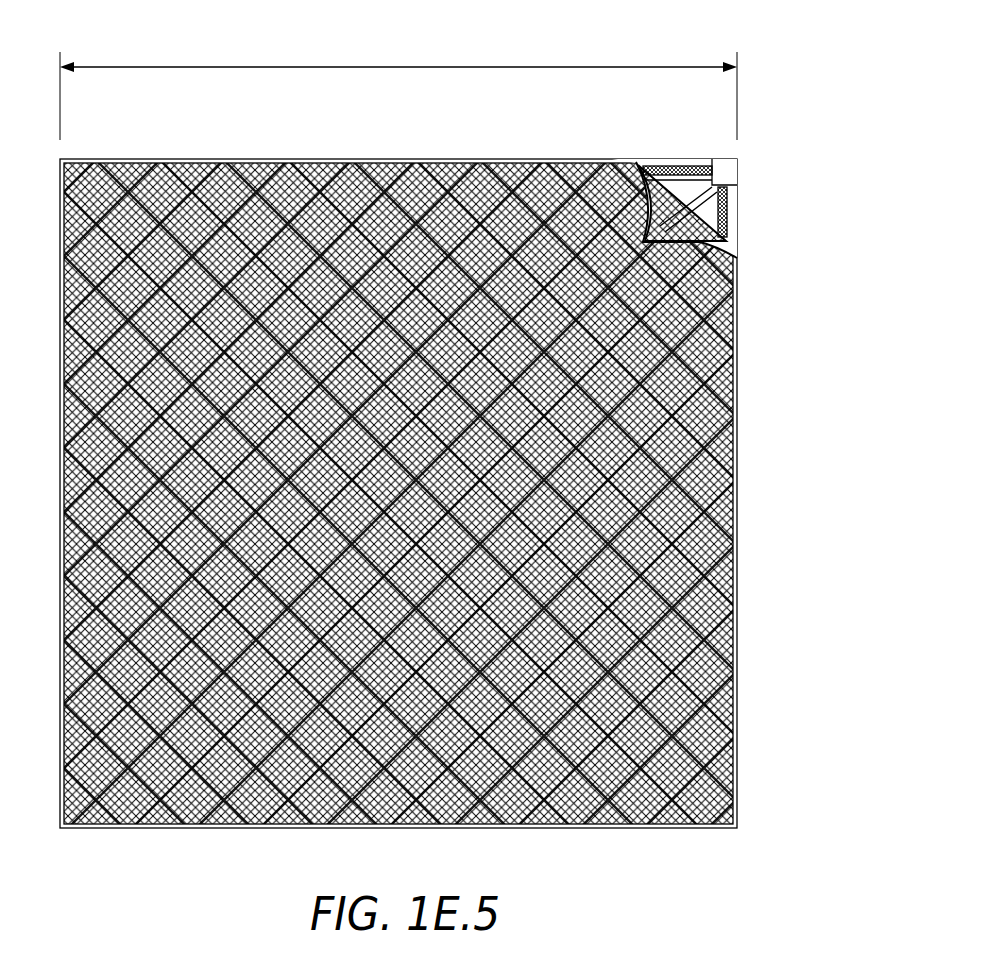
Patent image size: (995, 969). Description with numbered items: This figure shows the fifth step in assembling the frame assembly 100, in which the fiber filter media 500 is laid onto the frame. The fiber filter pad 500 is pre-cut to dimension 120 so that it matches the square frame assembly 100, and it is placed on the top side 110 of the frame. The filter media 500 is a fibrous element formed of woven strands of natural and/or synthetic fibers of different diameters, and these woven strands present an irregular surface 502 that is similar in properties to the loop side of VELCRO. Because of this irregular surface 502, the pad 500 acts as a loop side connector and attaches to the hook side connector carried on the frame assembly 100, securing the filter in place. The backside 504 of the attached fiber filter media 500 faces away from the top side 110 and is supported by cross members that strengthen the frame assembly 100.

The frame assembly 100 is at (737, 283).
The top side 110 is at (732, 203).
The dimension 120 is at (268, 66).
The fiber filter media 500 is at (672, 201).
The irregular surface 502 is at (703, 217).
The backside 504 is at (663, 207).